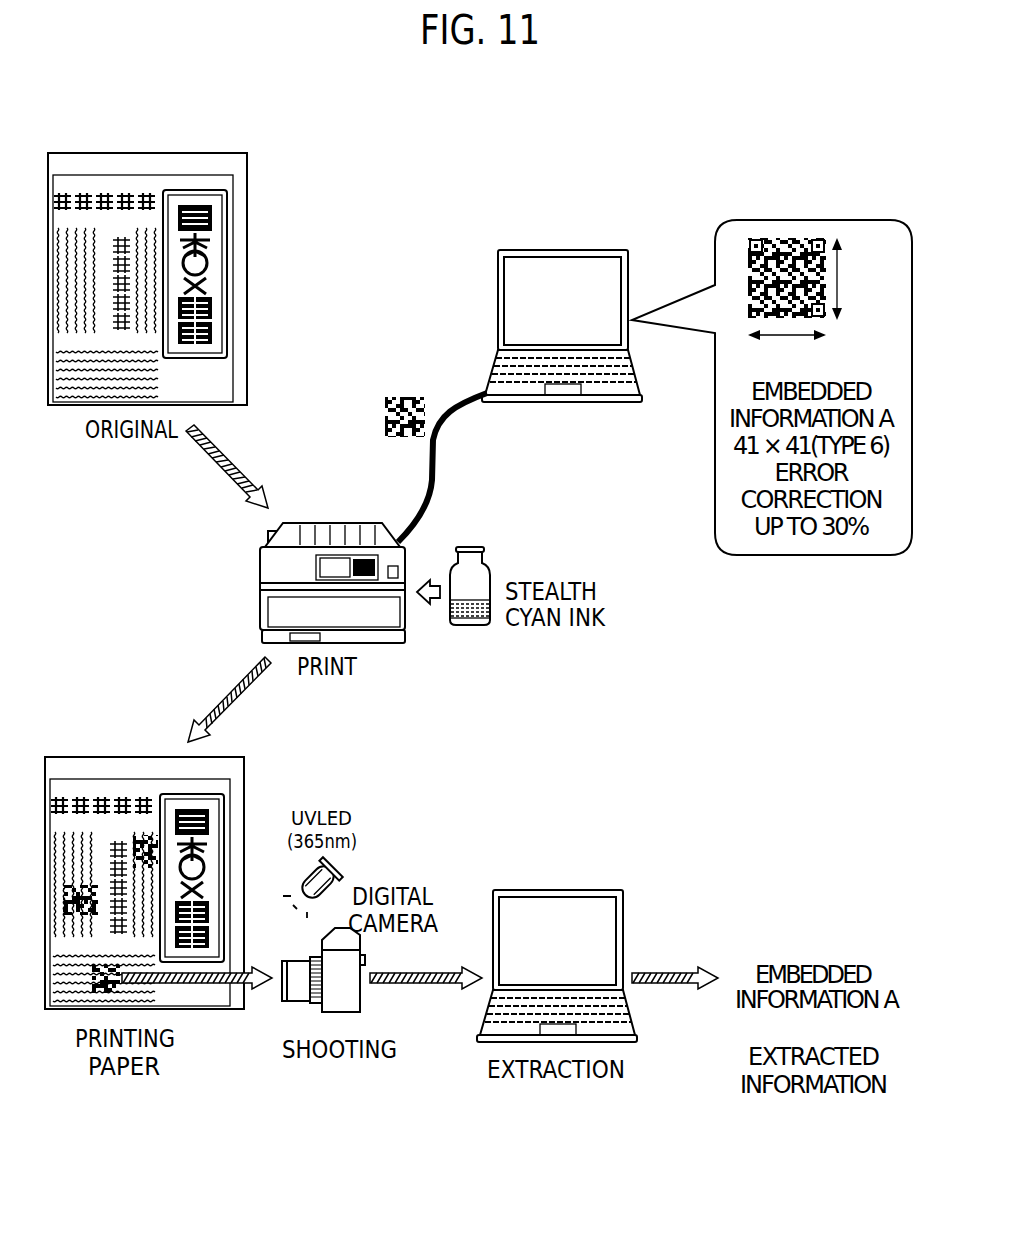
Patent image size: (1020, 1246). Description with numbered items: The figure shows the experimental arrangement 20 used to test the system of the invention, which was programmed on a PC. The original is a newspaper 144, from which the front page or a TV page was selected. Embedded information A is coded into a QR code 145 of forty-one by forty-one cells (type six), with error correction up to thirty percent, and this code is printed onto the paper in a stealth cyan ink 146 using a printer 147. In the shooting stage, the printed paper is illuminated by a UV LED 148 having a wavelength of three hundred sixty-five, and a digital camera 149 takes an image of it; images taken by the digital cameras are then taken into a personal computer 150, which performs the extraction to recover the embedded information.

The arrangement 20 is at (534, 188).
The newspaper 144 is at (247, 222).
The QR code 145 is at (766, 240).
The stealth cyan ink 146 is at (490, 570).
The printer 147 is at (300, 525).
The UV LED 148 is at (342, 867).
The digital camera 149 is at (362, 958).
The personal computer (PC) 150 is at (551, 890).